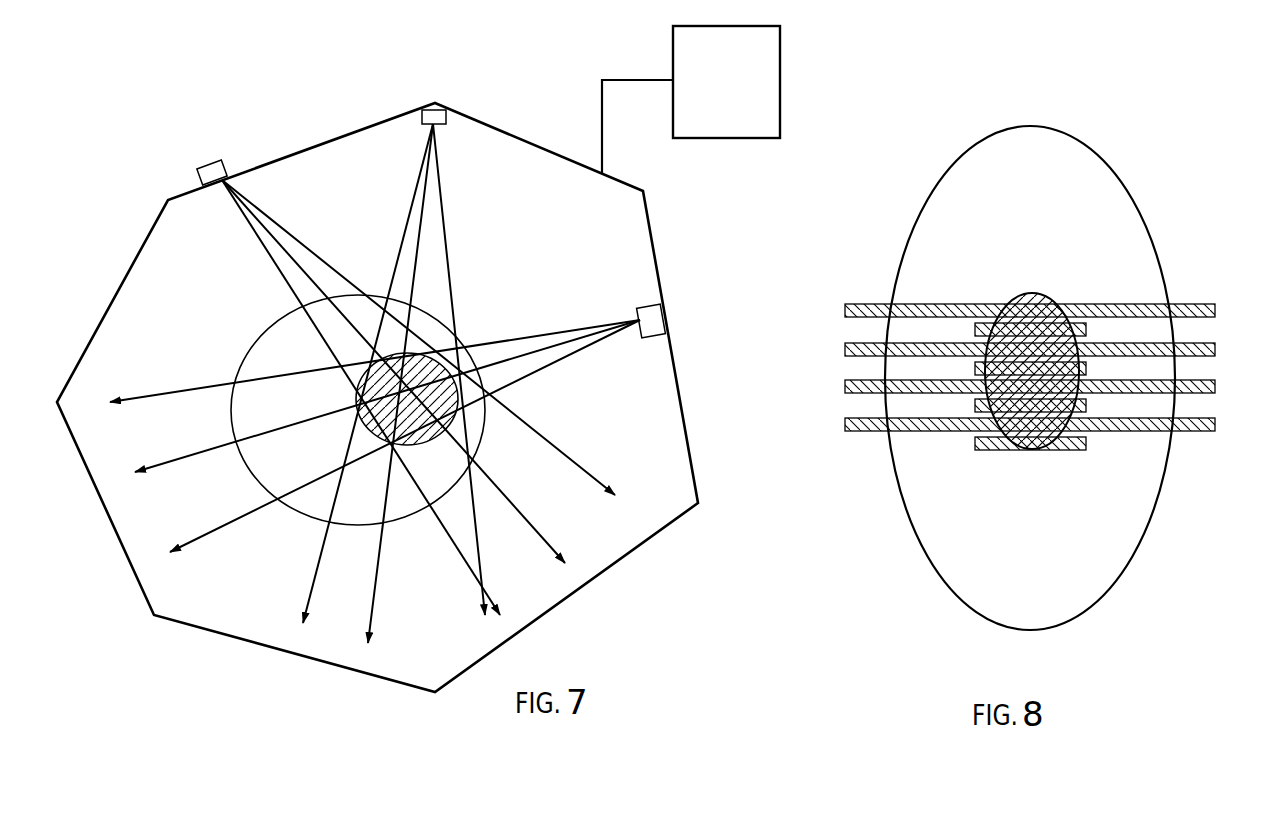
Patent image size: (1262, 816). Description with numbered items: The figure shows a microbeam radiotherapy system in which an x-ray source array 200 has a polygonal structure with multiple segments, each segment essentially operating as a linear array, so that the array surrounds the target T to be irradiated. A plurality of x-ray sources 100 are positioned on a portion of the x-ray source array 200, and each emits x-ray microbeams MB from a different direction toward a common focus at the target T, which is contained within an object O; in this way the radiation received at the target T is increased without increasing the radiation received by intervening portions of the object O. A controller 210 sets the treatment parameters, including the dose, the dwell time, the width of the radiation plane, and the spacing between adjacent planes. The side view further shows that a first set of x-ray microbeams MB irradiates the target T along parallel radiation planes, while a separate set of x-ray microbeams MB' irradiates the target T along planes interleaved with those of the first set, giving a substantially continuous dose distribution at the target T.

In FIG. 7, the x-ray sources 100 is at (427, 105).
In FIG. 7, the x-ray source array 200 is at (112, 230).
In FIG. 7, the controller 210 is at (740, 93).
In FIG. 7, the target T is at (425, 350).
In FIG. 8, the target T is at (1035, 452).
In FIG. 7, the object O is at (256, 346).
In FIG. 8, the object O is at (945, 177).
In FIG. 8, the x-ray microbeams MB is at (1037, 316).
In FIG. 8, the x-ray microbeams MB' is at (964, 427).